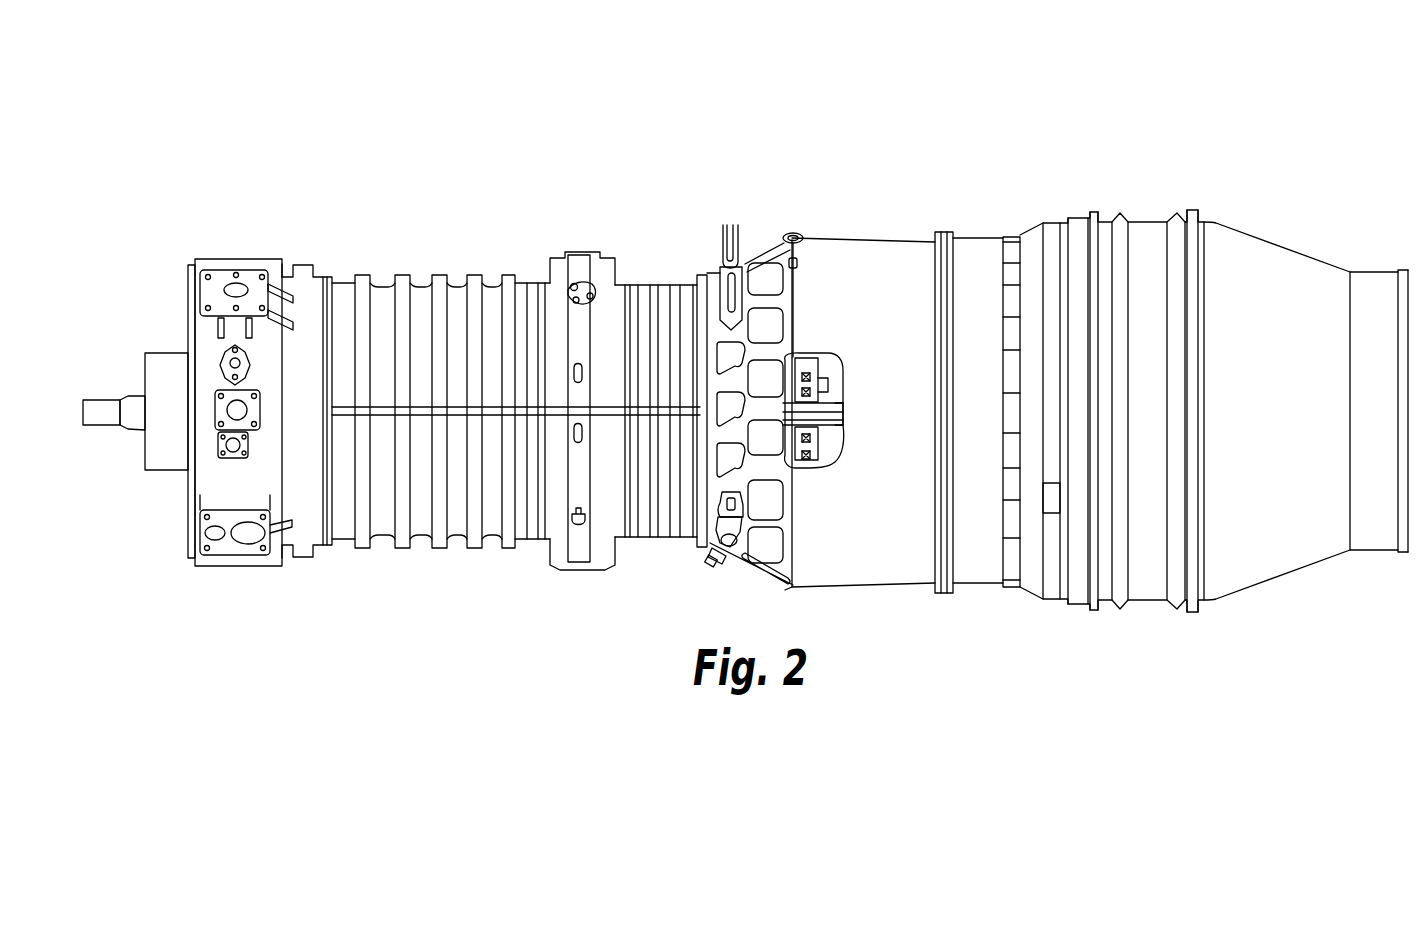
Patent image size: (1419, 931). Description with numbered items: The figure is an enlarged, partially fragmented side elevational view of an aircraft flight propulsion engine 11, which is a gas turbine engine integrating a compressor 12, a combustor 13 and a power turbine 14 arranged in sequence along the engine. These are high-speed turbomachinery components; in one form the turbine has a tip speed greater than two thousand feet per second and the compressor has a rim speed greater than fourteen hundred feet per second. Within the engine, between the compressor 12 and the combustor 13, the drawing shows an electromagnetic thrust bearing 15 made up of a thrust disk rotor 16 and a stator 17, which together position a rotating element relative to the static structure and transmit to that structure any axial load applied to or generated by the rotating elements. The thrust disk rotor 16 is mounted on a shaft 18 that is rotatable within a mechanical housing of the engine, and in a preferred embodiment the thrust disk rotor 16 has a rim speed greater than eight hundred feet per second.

The aircraft flight propulsion engine 11 is at (1289, 137).
The compressor 12 is at (420, 542).
The combustor 13 is at (873, 238).
The power turbine 14 is at (1153, 221).
The electromagnetic thrust bearing 15 is at (812, 383).
The thrust disk rotor 16 is at (788, 355).
The stator 17 is at (797, 357).
The shaft 18 is at (843, 410).